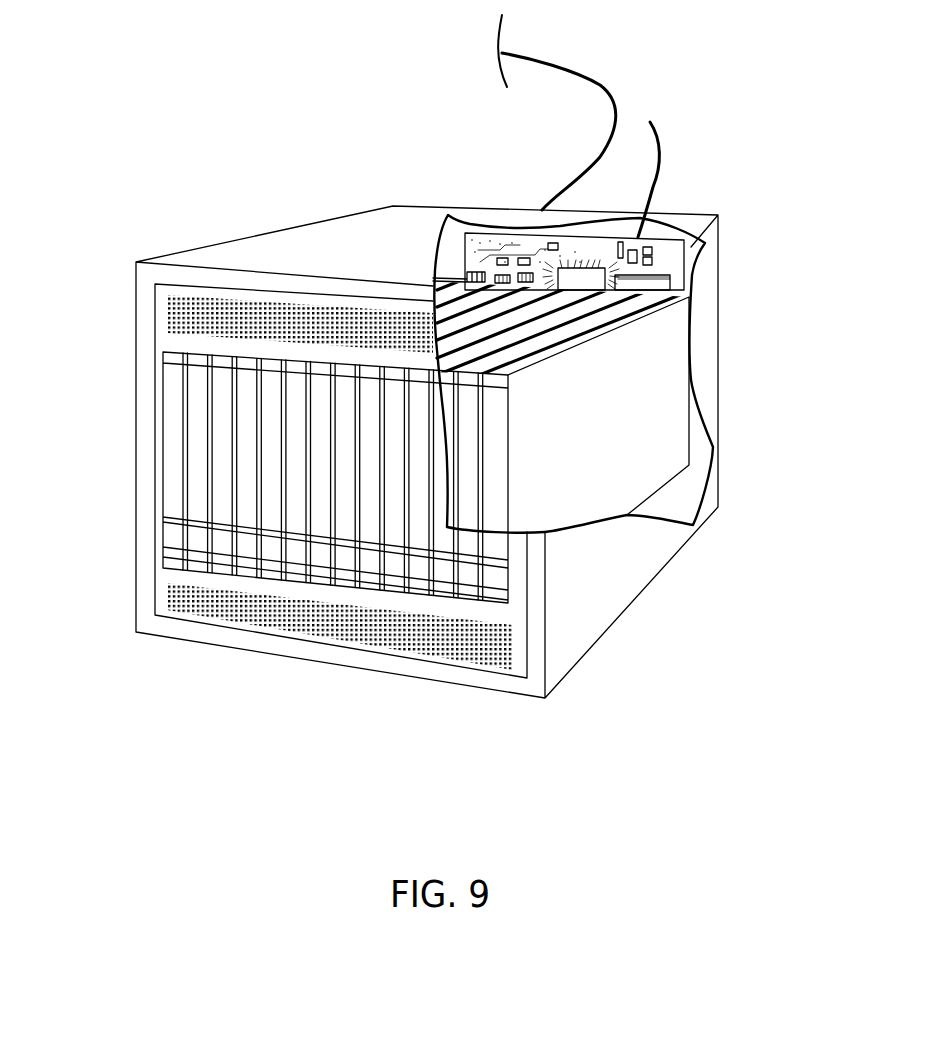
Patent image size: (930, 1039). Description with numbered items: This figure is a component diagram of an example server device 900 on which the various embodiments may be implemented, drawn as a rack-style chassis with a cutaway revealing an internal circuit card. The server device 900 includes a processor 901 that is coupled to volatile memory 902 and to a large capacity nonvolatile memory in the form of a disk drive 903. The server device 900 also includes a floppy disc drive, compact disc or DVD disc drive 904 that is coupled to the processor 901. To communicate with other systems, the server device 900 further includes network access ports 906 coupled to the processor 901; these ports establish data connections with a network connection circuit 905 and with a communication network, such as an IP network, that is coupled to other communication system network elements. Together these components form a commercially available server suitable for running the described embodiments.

The server device 900 is at (143, 165).
The processor 901 is at (568, 272).
The volatile memory 902 is at (668, 288).
The disk drive 903 is at (222, 410).
The disc drive 904 is at (197, 475).
The network connection circuit 905 is at (472, 273).
The network access ports 906 is at (588, 72).